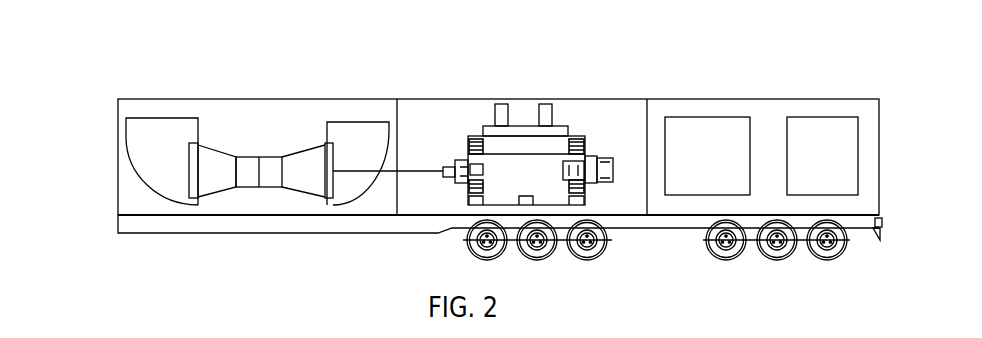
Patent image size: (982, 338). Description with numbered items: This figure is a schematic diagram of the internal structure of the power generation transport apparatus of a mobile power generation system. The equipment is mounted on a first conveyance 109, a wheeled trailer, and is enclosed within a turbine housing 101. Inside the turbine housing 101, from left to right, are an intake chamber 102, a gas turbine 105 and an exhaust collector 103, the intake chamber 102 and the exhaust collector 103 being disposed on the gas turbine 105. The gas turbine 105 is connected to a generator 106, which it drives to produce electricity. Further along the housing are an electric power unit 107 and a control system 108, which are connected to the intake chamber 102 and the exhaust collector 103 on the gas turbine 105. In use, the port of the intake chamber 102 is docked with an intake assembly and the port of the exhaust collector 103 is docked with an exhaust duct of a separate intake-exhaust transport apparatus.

The turbine housing 101 is at (516, 80).
The intake chamber 102 is at (115, 139).
The exhaust collector 103 is at (358, 110).
The gas turbine 105 is at (278, 156).
The generator 106 is at (458, 149).
The electric power unit 107 is at (707, 105).
The control system 108 is at (820, 105).
The first conveyance 109 is at (104, 223).